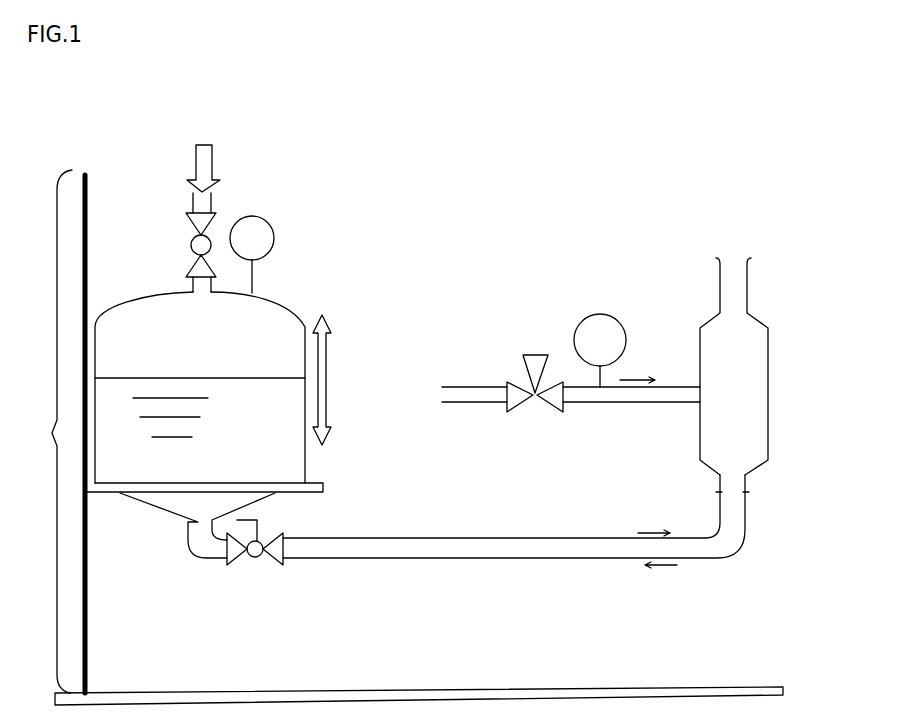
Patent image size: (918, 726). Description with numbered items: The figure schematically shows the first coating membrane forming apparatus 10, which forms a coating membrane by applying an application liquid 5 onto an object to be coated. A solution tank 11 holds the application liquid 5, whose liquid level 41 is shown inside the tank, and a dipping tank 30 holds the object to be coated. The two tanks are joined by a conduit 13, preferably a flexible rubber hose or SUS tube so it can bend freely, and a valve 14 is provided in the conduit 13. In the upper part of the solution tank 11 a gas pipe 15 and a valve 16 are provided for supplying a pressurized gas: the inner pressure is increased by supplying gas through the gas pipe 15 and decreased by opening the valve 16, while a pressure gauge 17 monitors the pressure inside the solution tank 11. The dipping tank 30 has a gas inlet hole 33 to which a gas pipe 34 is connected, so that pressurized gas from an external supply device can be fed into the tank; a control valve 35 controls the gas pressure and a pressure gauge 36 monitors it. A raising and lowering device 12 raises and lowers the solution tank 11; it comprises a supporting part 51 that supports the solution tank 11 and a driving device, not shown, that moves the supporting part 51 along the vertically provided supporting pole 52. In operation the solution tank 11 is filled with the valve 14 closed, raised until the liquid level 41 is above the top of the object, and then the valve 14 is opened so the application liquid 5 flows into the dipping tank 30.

The first coating membrane forming apparatus 10 is at (780, 297).
The solution tank 11 is at (287, 300).
The raising and lowering device 12 is at (48, 431).
The conduit 13 is at (598, 538).
The valve 14 is at (256, 557).
The gas pipe 15 is at (193, 206).
The valve 16 is at (191, 245).
The pressure gauge 17 is at (268, 223).
The dipping tank 30 is at (768, 368).
The gas inlet hole 33 is at (700, 390).
The gas pipe 34 is at (475, 387).
The control valve 35 is at (525, 392).
The pressure gauge 36 is at (603, 314).
The liquid level 41 is at (170, 378).
The application liquid 5 is at (242, 395).
The supporting part 51 is at (317, 460).
The supporting pole 52 is at (88, 615).